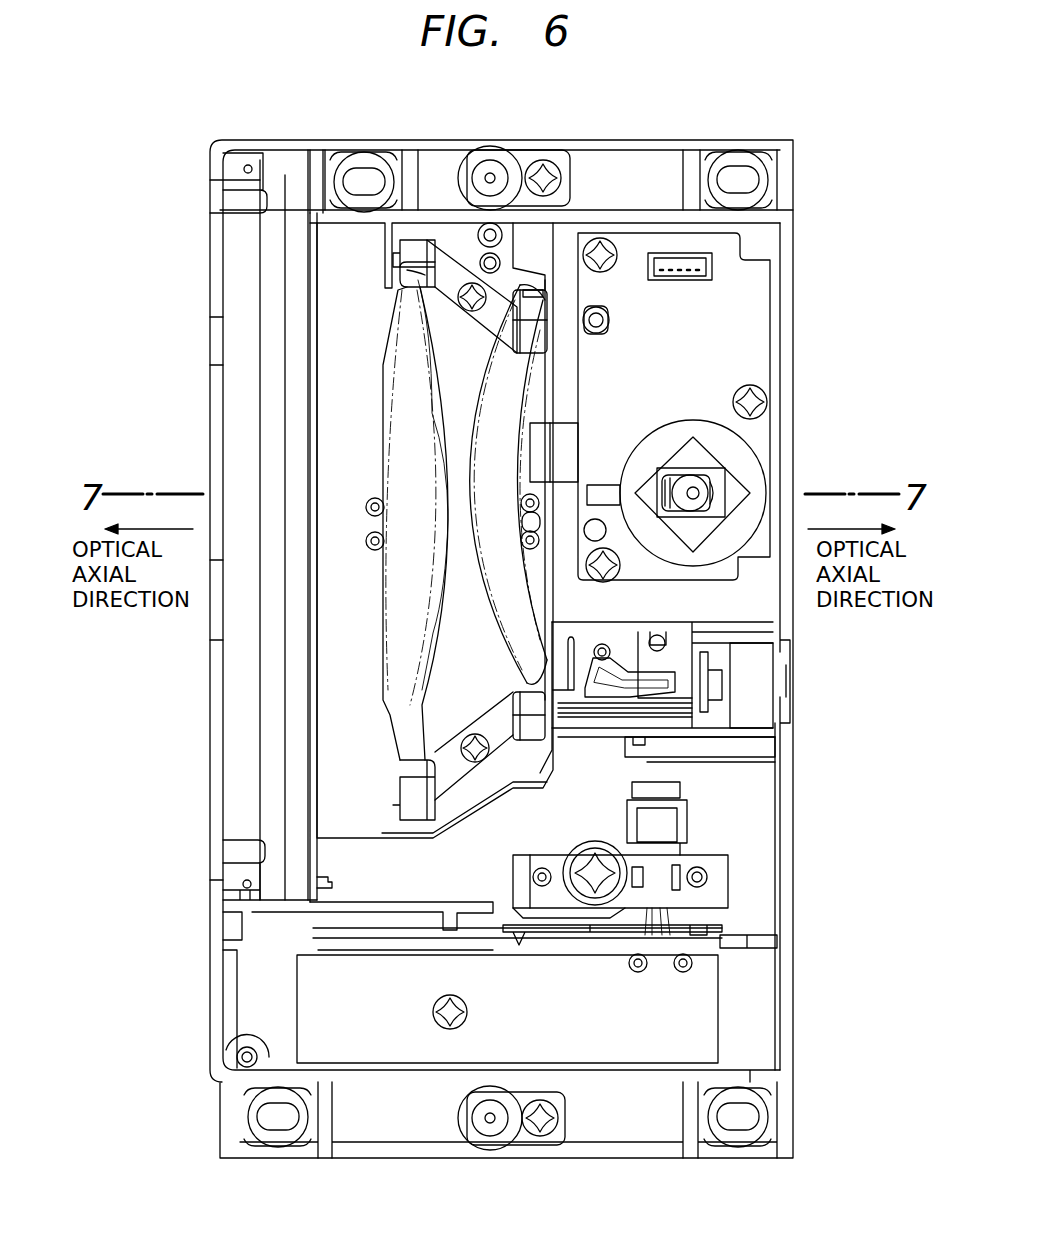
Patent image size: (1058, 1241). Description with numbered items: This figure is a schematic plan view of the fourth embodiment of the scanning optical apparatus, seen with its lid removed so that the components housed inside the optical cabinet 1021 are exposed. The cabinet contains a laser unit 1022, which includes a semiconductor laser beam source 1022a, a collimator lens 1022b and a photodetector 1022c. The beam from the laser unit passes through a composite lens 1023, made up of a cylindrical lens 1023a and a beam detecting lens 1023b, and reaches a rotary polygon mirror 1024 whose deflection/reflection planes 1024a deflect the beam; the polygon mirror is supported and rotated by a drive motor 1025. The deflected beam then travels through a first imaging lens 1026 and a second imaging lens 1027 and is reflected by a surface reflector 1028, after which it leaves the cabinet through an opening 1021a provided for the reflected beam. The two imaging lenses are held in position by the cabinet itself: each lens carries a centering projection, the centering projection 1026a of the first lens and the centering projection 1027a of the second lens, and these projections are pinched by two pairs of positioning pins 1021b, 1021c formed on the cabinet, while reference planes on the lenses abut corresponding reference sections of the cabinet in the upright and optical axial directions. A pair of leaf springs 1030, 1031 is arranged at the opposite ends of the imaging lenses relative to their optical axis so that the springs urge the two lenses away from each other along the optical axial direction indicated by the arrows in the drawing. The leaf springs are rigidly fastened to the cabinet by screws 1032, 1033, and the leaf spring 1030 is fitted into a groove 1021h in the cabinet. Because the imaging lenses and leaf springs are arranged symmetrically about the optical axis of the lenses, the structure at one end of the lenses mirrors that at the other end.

The optical cabinet 1021 is at (638, 160).
The opening 1021a is at (272, 707).
The positioning pins 1021b is at (535, 490).
The positioning pins 1021c is at (367, 500).
The groove 1021h is at (437, 282).
The laser unit 1022 is at (735, 888).
The semiconductor laser beam source 1022a is at (662, 882).
The collimator lens 1022b is at (655, 792).
The photodetector 1022c is at (570, 925).
The composite lens 1023 is at (670, 648).
The cylindrical lens 1023a is at (705, 695).
The beam detecting lens 1023b is at (605, 672).
The rotary polygon mirror 1024 is at (705, 455).
The deflection/reflection planes 1024a is at (735, 493).
The drive motor 1025 is at (756, 318).
The first imaging lens 1026 is at (545, 382).
The centering projection 1026a is at (535, 528).
The second imaging lens 1027 is at (405, 370).
The centering projection 1027a is at (367, 522).
The surface reflector 1028 is at (270, 407).
The leaf spring 1030 is at (443, 268).
The leaf spring 1031 is at (452, 772).
The screw 1032 is at (480, 312).
The screw 1033 is at (482, 735).